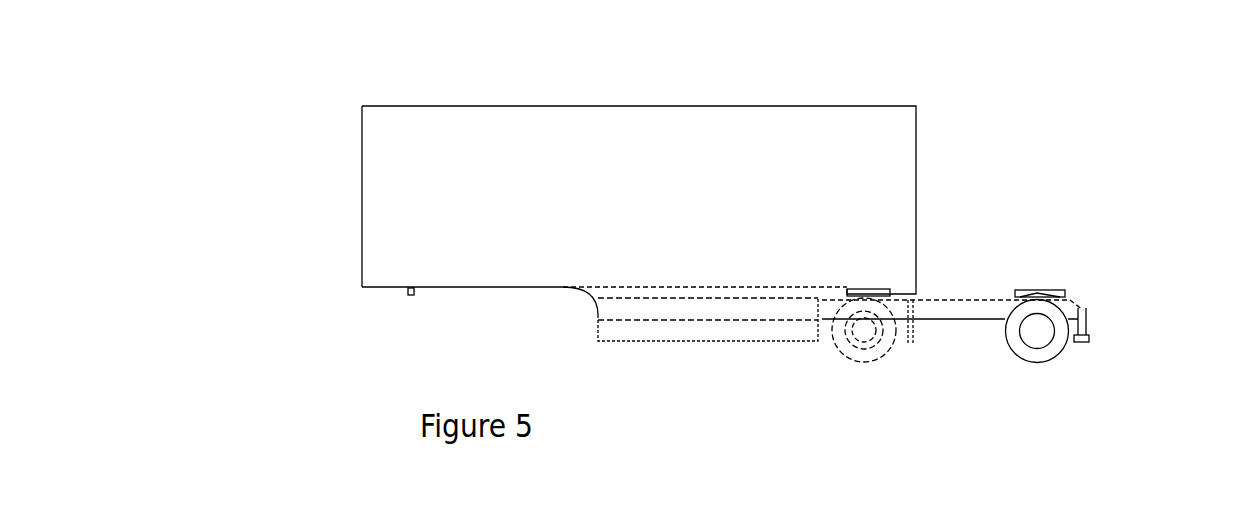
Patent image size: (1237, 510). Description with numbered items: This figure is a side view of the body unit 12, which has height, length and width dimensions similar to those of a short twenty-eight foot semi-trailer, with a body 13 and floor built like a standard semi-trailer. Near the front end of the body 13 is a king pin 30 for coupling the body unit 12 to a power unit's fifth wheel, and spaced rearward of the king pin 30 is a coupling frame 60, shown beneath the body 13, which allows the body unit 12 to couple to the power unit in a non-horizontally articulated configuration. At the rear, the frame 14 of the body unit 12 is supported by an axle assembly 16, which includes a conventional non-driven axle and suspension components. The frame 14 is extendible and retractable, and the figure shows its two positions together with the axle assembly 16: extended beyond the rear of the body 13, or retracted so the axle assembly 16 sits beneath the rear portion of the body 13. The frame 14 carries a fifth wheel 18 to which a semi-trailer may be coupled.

The body unit 12 is at (588, 106).
The body 13 is at (360, 210).
The frame 14 is at (947, 298).
The axle assembly 16 is at (822, 366).
The fifth wheel 18 is at (1037, 290).
The king pin 30 is at (408, 297).
The coupling frame 60 is at (597, 311).